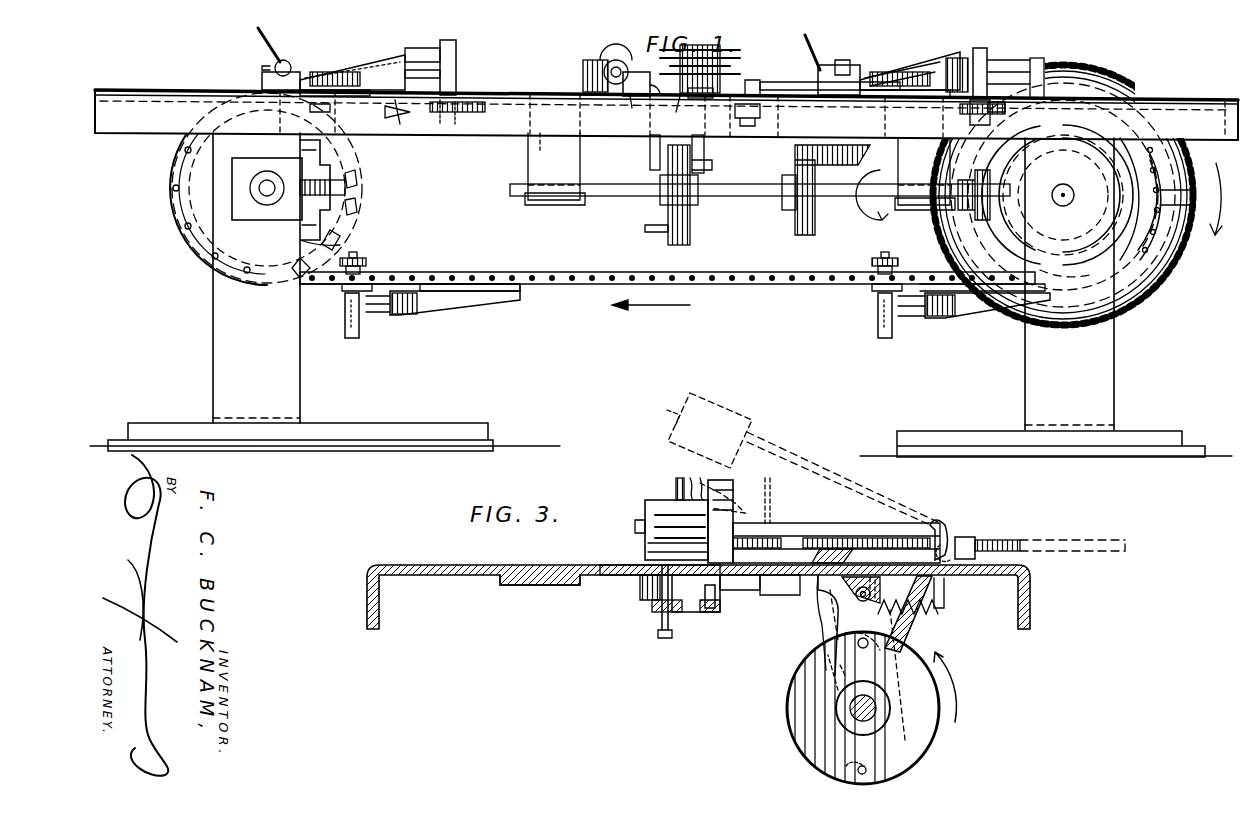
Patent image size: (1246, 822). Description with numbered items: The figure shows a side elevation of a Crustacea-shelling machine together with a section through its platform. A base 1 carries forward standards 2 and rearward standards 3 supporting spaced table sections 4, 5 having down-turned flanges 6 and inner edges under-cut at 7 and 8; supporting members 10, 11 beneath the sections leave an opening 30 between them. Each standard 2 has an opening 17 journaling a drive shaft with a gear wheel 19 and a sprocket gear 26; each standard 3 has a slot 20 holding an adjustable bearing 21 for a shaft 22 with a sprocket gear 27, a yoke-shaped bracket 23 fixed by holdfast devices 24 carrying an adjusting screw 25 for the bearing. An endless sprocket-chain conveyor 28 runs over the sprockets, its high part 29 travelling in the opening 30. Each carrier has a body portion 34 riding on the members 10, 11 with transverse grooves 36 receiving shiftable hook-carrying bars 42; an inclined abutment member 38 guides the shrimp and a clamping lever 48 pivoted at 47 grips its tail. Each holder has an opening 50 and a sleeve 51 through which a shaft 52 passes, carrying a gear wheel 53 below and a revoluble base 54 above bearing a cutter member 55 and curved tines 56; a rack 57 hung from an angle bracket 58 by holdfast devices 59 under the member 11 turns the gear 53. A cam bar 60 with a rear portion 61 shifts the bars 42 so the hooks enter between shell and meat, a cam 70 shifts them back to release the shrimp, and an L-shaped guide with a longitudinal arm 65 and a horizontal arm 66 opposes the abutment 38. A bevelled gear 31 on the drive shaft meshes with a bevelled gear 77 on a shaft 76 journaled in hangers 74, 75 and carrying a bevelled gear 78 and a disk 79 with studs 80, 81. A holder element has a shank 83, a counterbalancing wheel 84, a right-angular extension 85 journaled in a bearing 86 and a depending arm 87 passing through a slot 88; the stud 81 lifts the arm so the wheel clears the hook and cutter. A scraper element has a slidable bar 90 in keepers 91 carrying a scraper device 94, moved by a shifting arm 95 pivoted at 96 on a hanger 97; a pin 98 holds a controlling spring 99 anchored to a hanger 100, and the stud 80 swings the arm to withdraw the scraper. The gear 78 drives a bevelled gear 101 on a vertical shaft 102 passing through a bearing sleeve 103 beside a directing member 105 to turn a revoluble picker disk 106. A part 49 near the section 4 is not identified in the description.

In FIG. 1, the base 1 is at (420, 433).
In FIG. 1, the forward standards 2 is at (1114, 380).
In FIG. 1, the rearward standards 3 is at (290, 378).
In FIG. 1, the platform section 4 is at (1180, 98).
In FIG. 3, the platform section 4 is at (465, 591).
In FIG. 1, the platform section 5 is at (505, 92).
In FIG. 3, the platform section 5 is at (855, 565).
In FIG. 1, the down-turned flanges 6 is at (572, 130).
In FIG. 3, the down-turned flanges 6 is at (1030, 600).
In FIG. 3, the under-cut inner edge 7 is at (555, 565).
In FIG. 3, the under-cut inner edge 8 is at (748, 538).
In FIG. 3, the supporting member 10 is at (540, 580).
In FIG. 1, the supporting member 11 is at (1135, 175).
In FIG. 3, the supporting member 11 is at (780, 590).
In FIG. 1, the opening 17 is at (1062, 203).
In FIG. 1, the gear wheel 19 is at (1100, 75).
In FIG. 1, the slot 20 is at (215, 195).
In FIG. 1, the adjustable bearing 21 is at (235, 176).
In FIG. 1, the transversely extending shaft 22 is at (263, 190).
In FIG. 1, the bracket 23 is at (322, 160).
In FIG. 1, the holdfast devices 24 is at (340, 238).
In FIG. 1, the adjusting screw 25 is at (347, 187).
In FIG. 1, the sprocket gear 26 is at (1010, 272).
In FIG. 1, the sprocket gear 27 is at (358, 212).
In FIG. 1, the endless conveyor 28 is at (764, 284).
In FIG. 3, the high part of conveyor 29 is at (645, 602).
In FIG. 3, the opening 30 is at (612, 585).
In FIG. 1, the bevelled gear 31 is at (1115, 215).
In FIG. 1, the body portion 34 is at (262, 78).
In FIG. 1, the transverse grooves 36 is at (494, 275).
In FIG. 1, the abutment member 38 is at (395, 60).
In FIG. 1, the hook-carrying bars 42 is at (290, 92).
In FIG. 1, the pivot 47 is at (288, 62).
In FIG. 1, the clamping lever 48 is at (268, 44).
In FIG. 3, the plate edge 49 is at (548, 565).
In FIG. 1, the opening 50 is at (768, 117).
In FIG. 3, the opening 50 is at (696, 585).
In FIG. 3, the sleeve 51 is at (696, 597).
In FIG. 3, the shaft 52 is at (667, 638).
In FIG. 1, the gear wheel 53 is at (472, 112).
In FIG. 3, the gear wheel 53 is at (655, 612).
In FIG. 1, the revoluble base 54 is at (1036, 58).
In FIG. 3, the revoluble base 54 is at (630, 566).
In FIG. 1, the cutter member 55 is at (458, 50).
In FIG. 3, the cutter member 55 is at (735, 492).
In FIG. 1, the tines 56 is at (432, 48).
In FIG. 3, the tines 56 is at (686, 477).
In FIG. 1, the rack 57 is at (384, 113).
In FIG. 3, the angle-shaped bracket 58 is at (716, 614).
In FIG. 3, the holdfast devices 59 is at (740, 592).
In FIG. 1, the cam bar 60 is at (329, 111).
In FIG. 1, the rear portion of cam bar 61 is at (758, 75).
In FIG. 1, the longitudinal arm 65 is at (616, 60).
In FIG. 1, the horizontal arm 66 is at (583, 75).
In FIG. 1, the cam 70 is at (900, 58).
In FIG. 1, the shaft hanger 74 is at (552, 205).
In FIG. 1, the shaft hanger 75 is at (915, 210).
In FIG. 3, the shaft hanger 75 is at (835, 600).
In FIG. 1, the longitudinally extending shaft 76 is at (600, 196).
In FIG. 3, the longitudinally extending shaft 76 is at (878, 708).
In FIG. 1, the bevelled gear 77 is at (980, 220).
In FIG. 1, the bevelled gear 78 is at (795, 162).
In FIG. 1, the circular disk 79 is at (668, 212).
In FIG. 3, the circular disk 79 is at (930, 738).
In FIG. 1, the stud 80 is at (705, 160).
In FIG. 3, the stud 80 is at (859, 652).
In FIG. 1, the stud 81 is at (650, 233).
In FIG. 3, the stud 81 is at (868, 768).
In FIG. 3, the shank 83 is at (805, 470).
In FIG. 1, the wheel 84 is at (636, 72).
In FIG. 3, the wheel 84 is at (722, 420).
In FIG. 3, the right angular extension 85 is at (968, 537).
In FIG. 1, the bearing 86 is at (630, 98).
In FIG. 3, the bearing 86 is at (940, 525).
In FIG. 1, the depending arm 87 is at (650, 148).
In FIG. 3, the depending arm 87 is at (912, 636).
In FIG. 1, the slot 88 is at (600, 60).
In FIG. 1, the slidable bar 90 is at (698, 100).
In FIG. 3, the slidable bar 90 is at (1072, 533).
In FIG. 1, the keepers 91 is at (678, 100).
In FIG. 3, the keepers 91 is at (1005, 540).
In FIG. 1, the scraper device 94 is at (710, 50).
In FIG. 3, the scraper device 94 is at (676, 486).
In FIG. 1, the shifting arm 95 is at (712, 165).
In FIG. 3, the shifting arm 95 is at (832, 537).
In FIG. 3, the pivot 96 is at (874, 578).
In FIG. 3, the hanger 97 is at (874, 588).
In FIG. 3, the pin 98 is at (855, 604).
In FIG. 3, the controlling spring 99 is at (915, 620).
In FIG. 3, the hanger 100 is at (945, 590).
In FIG. 1, the bevelled gear 101 is at (876, 189).
In FIG. 1, the vertically disposed shaft 102 is at (845, 60).
In FIG. 1, the bearing sleeve 103 is at (858, 120).
In FIG. 1, the directing member 105 is at (830, 99).
In FIG. 1, the revoluble disk 106 is at (929, 111).